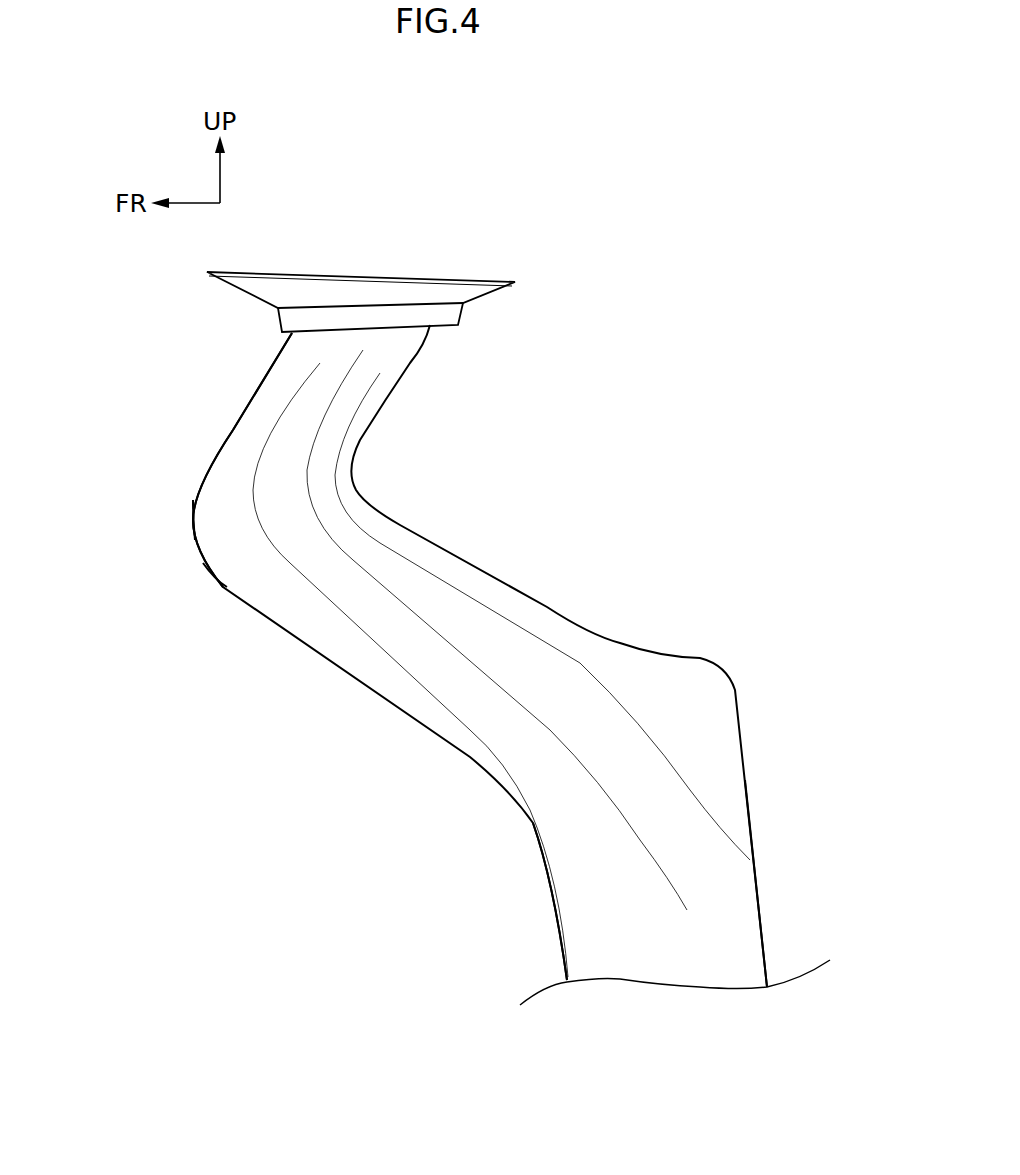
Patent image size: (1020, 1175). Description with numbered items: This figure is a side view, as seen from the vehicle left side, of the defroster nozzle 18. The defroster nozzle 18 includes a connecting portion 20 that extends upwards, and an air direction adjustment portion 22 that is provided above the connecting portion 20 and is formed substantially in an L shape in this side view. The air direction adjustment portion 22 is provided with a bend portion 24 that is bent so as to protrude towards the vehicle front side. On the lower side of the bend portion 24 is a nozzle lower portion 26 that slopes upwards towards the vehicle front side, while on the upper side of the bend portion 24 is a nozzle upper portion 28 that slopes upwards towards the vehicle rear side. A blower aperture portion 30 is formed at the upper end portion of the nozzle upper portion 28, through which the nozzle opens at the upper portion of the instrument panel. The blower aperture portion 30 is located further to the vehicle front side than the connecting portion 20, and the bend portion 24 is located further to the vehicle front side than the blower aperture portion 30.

The defroster nozzle 18 is at (620, 644).
The connecting portion 20 is at (555, 903).
The air direction adjustment portion 22 is at (86, 490).
The bend portion 24 is at (195, 540).
The nozzle lower portion 26 is at (227, 587).
The nozzle upper portion 28 is at (237, 432).
The blower aperture portion 30 is at (486, 278).